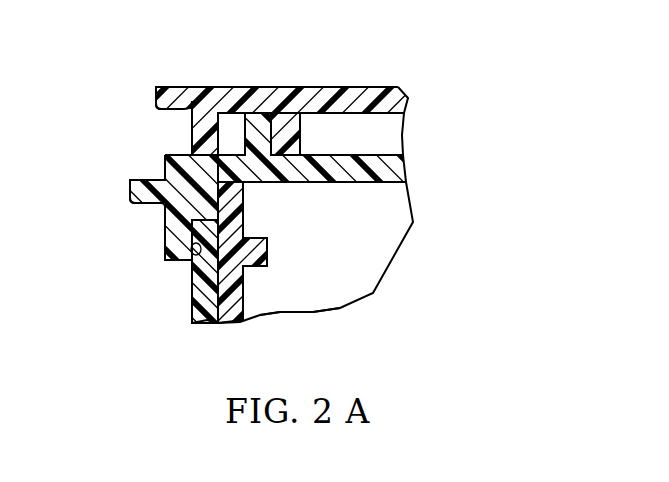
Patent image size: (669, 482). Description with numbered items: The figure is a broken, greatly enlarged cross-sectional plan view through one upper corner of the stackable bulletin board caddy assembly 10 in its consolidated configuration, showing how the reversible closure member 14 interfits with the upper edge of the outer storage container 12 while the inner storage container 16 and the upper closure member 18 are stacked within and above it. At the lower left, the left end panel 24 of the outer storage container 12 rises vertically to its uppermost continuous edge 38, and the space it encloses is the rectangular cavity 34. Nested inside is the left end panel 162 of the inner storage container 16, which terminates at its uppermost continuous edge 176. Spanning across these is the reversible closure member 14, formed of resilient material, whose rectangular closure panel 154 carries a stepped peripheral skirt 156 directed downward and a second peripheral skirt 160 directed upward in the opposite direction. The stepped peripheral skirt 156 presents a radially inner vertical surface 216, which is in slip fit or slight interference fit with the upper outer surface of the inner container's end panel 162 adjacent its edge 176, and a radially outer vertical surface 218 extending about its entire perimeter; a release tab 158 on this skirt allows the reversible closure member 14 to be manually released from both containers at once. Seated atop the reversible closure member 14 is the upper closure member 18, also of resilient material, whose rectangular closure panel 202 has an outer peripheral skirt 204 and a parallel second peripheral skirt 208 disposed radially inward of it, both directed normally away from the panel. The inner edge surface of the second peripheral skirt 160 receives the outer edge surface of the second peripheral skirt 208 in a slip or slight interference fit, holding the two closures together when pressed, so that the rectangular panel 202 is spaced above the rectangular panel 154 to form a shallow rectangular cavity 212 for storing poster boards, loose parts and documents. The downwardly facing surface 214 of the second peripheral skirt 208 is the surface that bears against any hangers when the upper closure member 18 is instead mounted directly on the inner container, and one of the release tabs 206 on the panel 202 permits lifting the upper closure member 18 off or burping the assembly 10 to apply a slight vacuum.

The stackable bulletin board caddy assembly 10 is at (177, 46).
The outer storage container 12 is at (185, 315).
The reversible closure member 14 is at (158, 166).
The inner storage container 16 is at (251, 316).
The upper closure member 18 is at (392, 81).
The left end panel 24 is at (190, 294).
The rectangular cavity 34 is at (351, 261).
The uppermost continuous edge 38 is at (198, 218).
The rectangular closure panel 154 is at (363, 182).
The stepped peripheral skirt 156 is at (165, 253).
The release tab 158 is at (130, 198).
The second peripheral skirt 160 is at (254, 118).
The left end panel 162 is at (228, 313).
The uppermost continuous edge 176 is at (190, 155).
The rectangular closure panel 202 is at (352, 87).
The peripheral skirt 204 is at (190, 135).
The release tabs 206 is at (160, 106).
The second peripheral skirt 208 is at (316, 112).
The shallow rectangular cavity 212 is at (392, 133).
The downwardly facing surface 214 is at (312, 183).
The radially inner vertical surface 216 is at (313, 282).
The radially outer vertical surface 218 is at (176, 249).